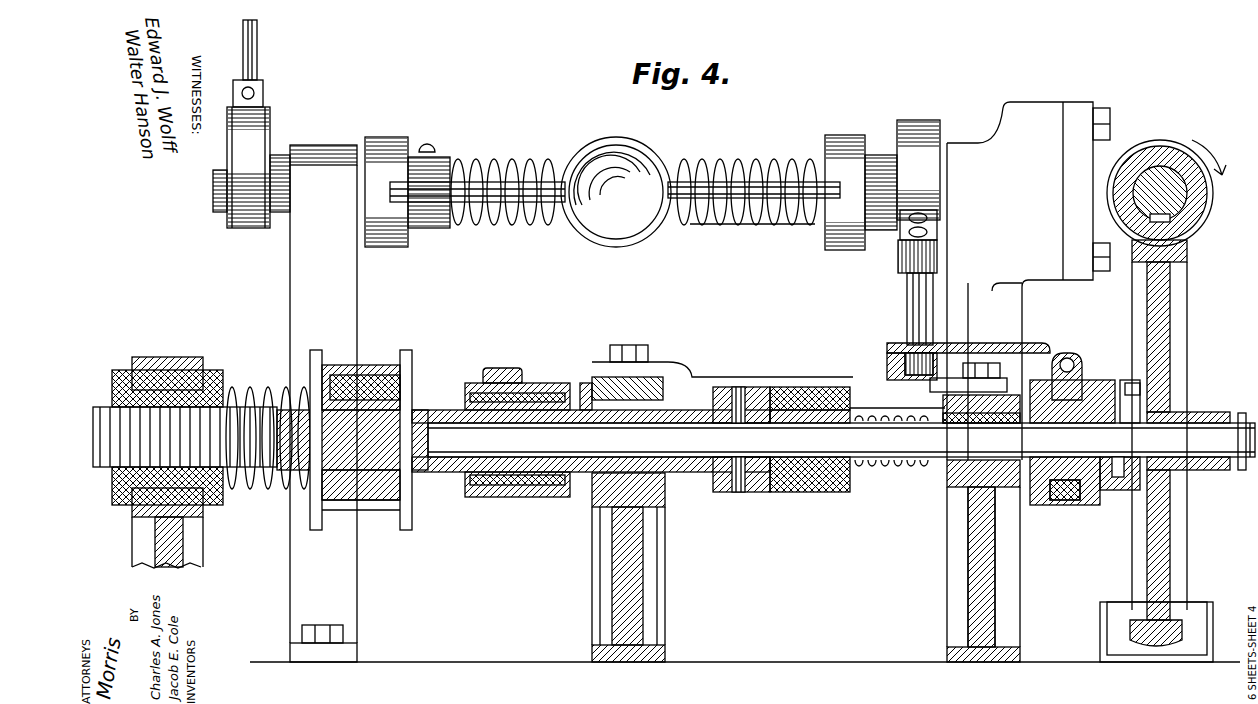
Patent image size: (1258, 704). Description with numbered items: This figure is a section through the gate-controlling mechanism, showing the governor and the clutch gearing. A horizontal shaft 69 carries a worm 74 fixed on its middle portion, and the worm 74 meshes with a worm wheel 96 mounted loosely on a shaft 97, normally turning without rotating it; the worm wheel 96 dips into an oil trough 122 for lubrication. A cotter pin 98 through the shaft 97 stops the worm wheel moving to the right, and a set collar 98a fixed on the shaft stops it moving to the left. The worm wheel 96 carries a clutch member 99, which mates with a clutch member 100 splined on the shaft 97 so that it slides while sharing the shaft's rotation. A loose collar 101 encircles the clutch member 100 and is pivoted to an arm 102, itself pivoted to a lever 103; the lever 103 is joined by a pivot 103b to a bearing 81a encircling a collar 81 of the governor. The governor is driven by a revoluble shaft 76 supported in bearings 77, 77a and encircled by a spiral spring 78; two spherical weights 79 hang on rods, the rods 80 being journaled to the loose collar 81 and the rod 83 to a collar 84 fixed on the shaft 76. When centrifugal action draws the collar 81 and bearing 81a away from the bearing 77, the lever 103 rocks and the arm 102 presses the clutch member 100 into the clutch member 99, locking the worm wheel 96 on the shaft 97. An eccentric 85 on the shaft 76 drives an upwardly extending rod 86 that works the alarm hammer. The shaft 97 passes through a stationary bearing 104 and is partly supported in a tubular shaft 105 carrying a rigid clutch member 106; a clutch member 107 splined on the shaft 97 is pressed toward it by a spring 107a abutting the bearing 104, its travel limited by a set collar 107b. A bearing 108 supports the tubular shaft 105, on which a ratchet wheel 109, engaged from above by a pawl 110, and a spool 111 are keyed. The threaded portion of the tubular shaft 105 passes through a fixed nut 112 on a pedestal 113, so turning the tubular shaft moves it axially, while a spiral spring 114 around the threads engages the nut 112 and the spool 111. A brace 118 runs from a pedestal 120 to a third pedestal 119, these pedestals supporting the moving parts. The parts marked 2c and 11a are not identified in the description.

The shaft housing 2c is at (375, 365).
The threaded adjusting rod 11a is at (105, 432).
The horizontal shaft 69 is at (1165, 186).
The worm 74 is at (1152, 160).
The revoluble shaft 76 is at (214, 200).
The bearing 77 is at (990, 150).
The bearing 77a is at (308, 152).
The spiral spring 78 is at (745, 170).
The weight 79 is at (628, 150).
The rod 80 is at (762, 226).
The collar 81 is at (845, 150).
The bearing 81a is at (912, 128).
The rod 83 is at (498, 190).
The collar 84 is at (380, 147).
The eccentric 85 is at (252, 130).
The rod 86 is at (258, 55).
The worm wheel 96 is at (1175, 262).
The shaft 97 is at (1180, 420).
The cotter pin 98 is at (1242, 412).
The set collar 98a is at (1125, 492).
The clutch member 99 is at (1132, 392).
The clutch member 100 is at (1085, 380).
The collar 101 is at (1068, 502).
The arm 102 is at (1035, 345).
The lever 103 is at (907, 297).
The pivot 103b is at (905, 246).
The stationary bearing 104 is at (942, 416).
The tubular shaft 105 is at (695, 410).
The clutch member 106 is at (748, 388).
The clutch member 107 is at (815, 407).
The spring 107a is at (896, 480).
The set collar 107b is at (805, 495).
The bearing 108 is at (650, 398).
The ratchet wheel 109 is at (540, 395).
The pawl 110 is at (500, 368).
The spool 111 is at (402, 388).
The fixed nut 112 is at (118, 370).
The pedestal 113 is at (168, 357).
The spiral spring 114 is at (252, 492).
The brace 118 is at (786, 387).
The pedestal 119 is at (945, 403).
The pedestal 120 is at (598, 383).
The oil trough 122 is at (1198, 615).